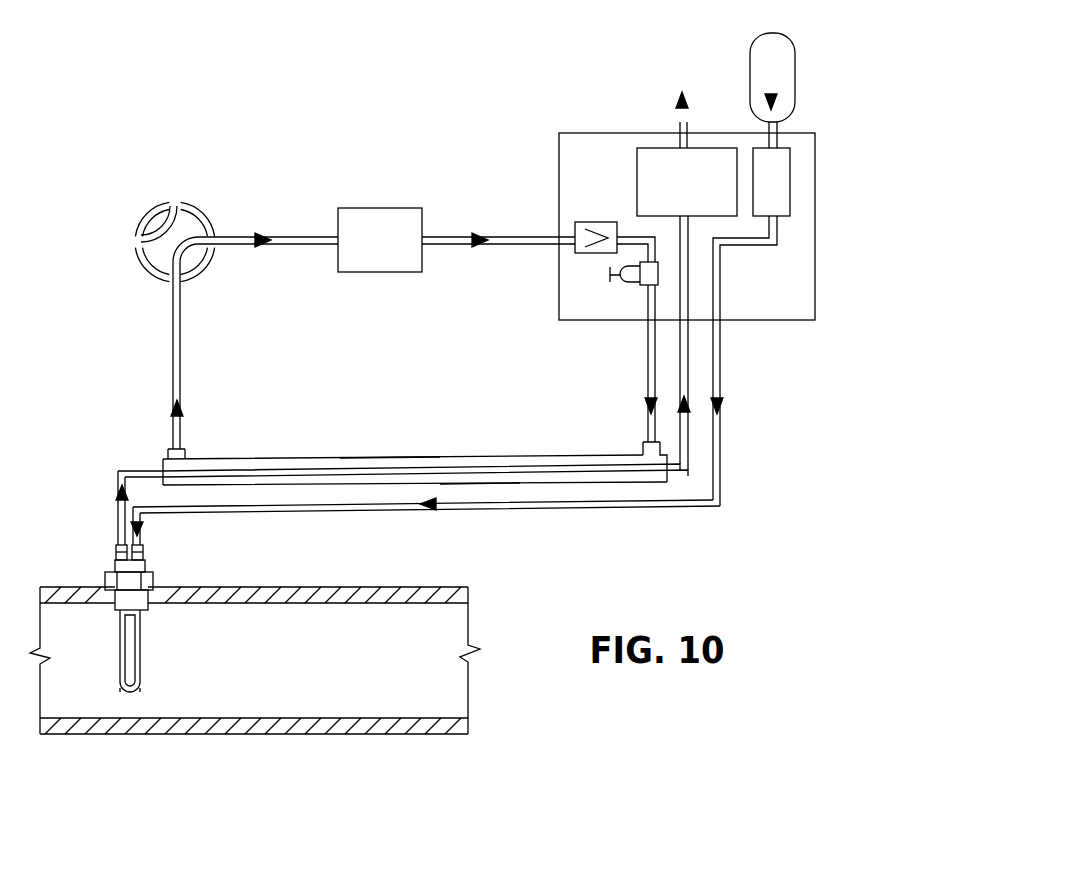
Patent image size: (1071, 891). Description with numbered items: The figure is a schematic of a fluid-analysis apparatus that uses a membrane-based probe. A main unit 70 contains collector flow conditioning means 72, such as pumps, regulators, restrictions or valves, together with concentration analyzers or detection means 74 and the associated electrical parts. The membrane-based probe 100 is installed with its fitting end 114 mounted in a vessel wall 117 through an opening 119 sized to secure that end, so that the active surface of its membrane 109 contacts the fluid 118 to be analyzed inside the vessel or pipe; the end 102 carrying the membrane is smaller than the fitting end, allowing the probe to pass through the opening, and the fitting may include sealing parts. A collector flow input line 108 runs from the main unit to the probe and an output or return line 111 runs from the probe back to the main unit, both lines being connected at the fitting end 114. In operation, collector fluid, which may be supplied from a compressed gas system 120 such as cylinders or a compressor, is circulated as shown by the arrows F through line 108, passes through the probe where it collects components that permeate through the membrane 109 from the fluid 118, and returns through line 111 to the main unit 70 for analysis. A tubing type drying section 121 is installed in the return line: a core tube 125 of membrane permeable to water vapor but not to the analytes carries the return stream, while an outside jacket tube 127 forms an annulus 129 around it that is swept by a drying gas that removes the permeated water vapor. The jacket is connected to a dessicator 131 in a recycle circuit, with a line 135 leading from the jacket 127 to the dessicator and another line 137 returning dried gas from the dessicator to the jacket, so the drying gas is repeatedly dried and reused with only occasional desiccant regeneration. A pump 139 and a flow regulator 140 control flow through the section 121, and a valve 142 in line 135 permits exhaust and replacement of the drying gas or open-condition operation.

The main unit 70 is at (559, 173).
The collector flow conditioning means 72 is at (790, 185).
The concentration analyzer 74 is at (637, 167).
The membrane-based probe 100 is at (142, 610).
The end of the probe 102 is at (130, 693).
The collector flow input line 108 is at (560, 509).
The membrane 109 is at (132, 667).
The output line 111 is at (118, 468).
The fitting end 114 is at (143, 598).
The vessel wall 117 is at (432, 588).
The fluid 118 is at (334, 669).
The opening 119 is at (117, 605).
The compressed gas system 120 is at (797, 70).
The tubing type drying section 121 is at (216, 448).
The core tube 125 is at (298, 470).
The outside jacket tube 127 is at (383, 458).
The annulus 129 is at (470, 460).
The dessicator 131 is at (362, 208).
The line 135 is at (181, 316).
The line 137 is at (646, 379).
The pump 139 is at (582, 253).
The flow regulator 140 is at (628, 285).
The valve 142 is at (197, 220).